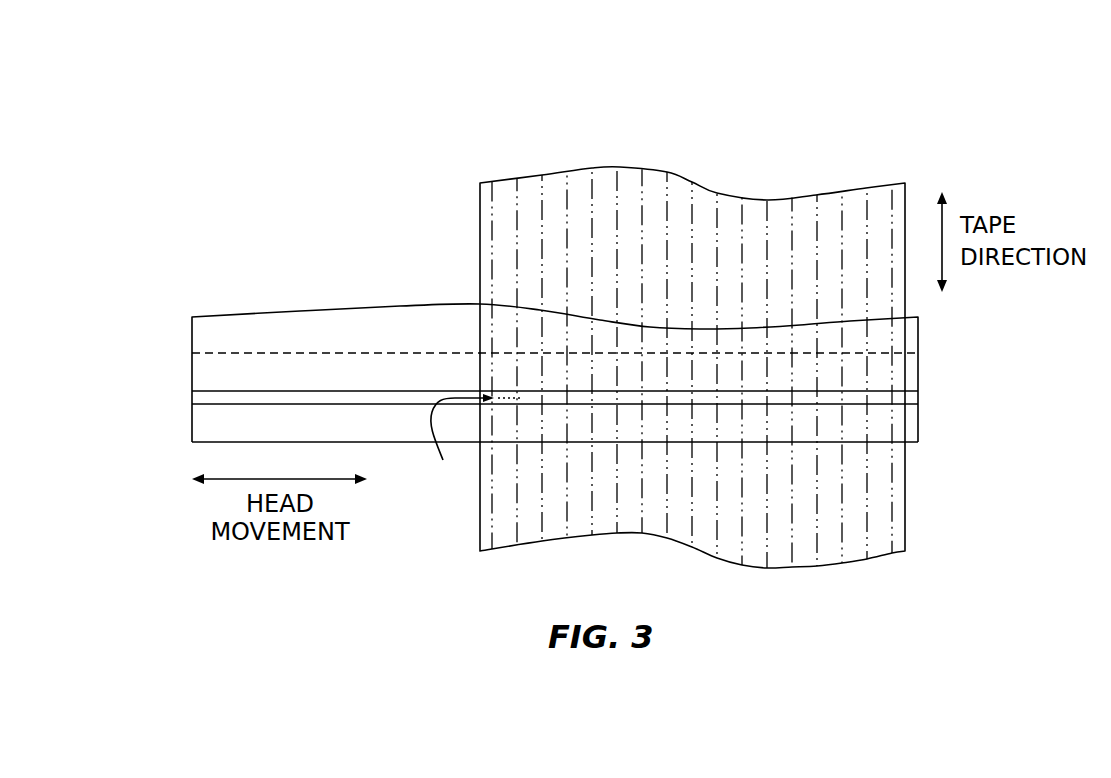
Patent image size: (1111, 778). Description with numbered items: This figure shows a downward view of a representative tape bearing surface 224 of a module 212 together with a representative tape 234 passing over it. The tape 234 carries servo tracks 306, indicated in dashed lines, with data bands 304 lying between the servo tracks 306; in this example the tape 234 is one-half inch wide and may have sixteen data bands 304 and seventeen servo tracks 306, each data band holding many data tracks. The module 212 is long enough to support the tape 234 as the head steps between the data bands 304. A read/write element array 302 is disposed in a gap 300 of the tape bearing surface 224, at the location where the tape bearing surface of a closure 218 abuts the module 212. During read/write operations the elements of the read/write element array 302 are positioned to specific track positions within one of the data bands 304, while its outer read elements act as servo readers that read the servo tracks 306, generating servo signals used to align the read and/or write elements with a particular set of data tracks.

The module 212 is at (250, 312).
The closure 218 is at (192, 418).
The tape bearing surface 224 is at (168, 363).
The tape 234 is at (480, 200).
The gap 300 is at (192, 398).
The read/write element array 302 is at (443, 460).
The data bands 304 is at (529, 188).
The servo tracks 306 is at (692, 182).